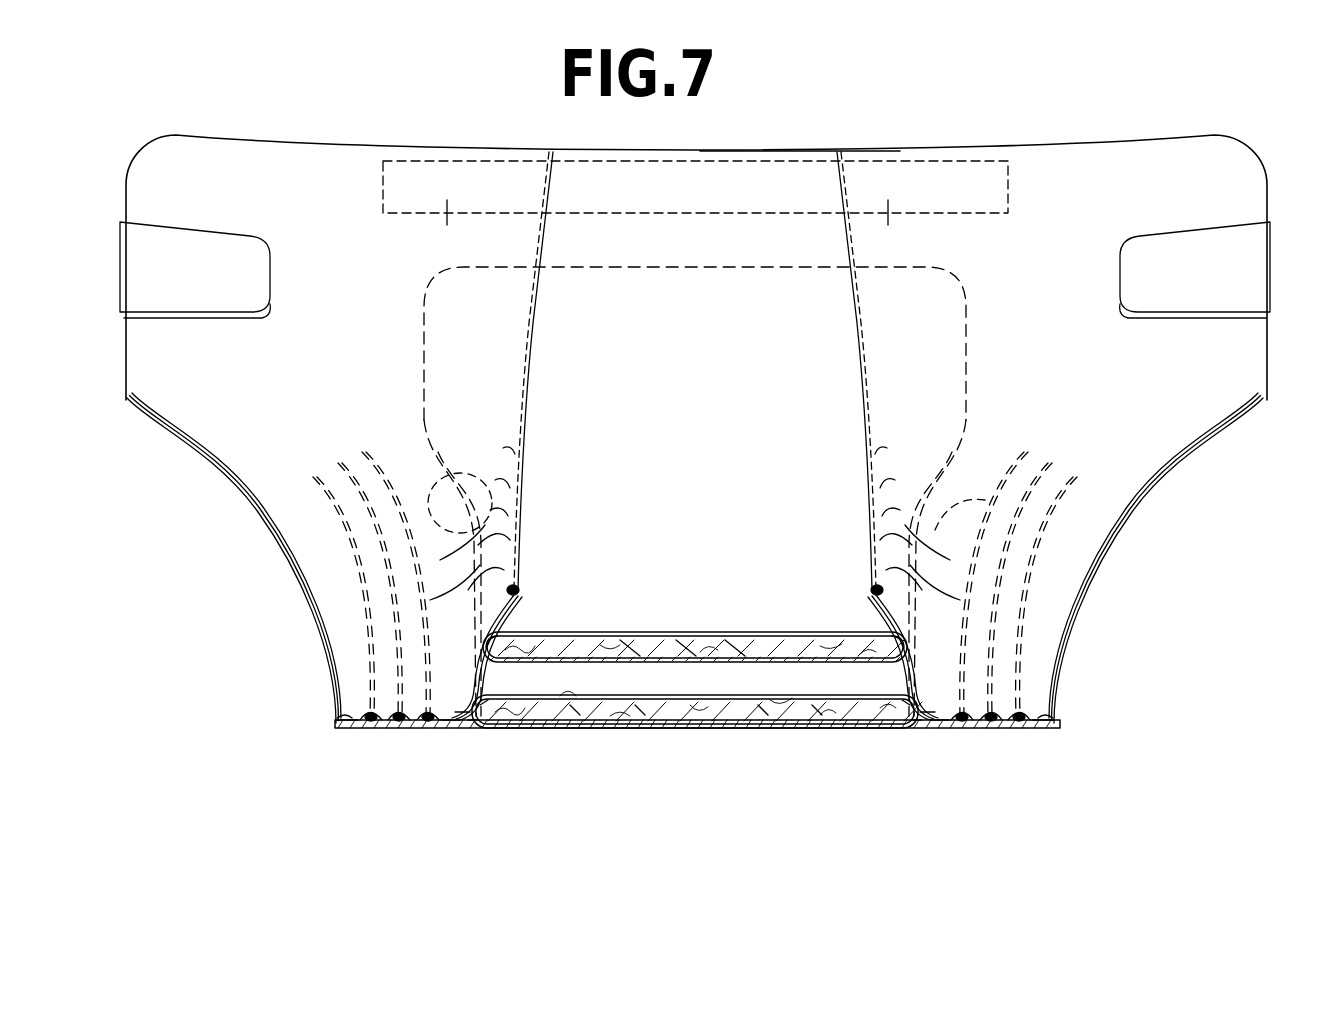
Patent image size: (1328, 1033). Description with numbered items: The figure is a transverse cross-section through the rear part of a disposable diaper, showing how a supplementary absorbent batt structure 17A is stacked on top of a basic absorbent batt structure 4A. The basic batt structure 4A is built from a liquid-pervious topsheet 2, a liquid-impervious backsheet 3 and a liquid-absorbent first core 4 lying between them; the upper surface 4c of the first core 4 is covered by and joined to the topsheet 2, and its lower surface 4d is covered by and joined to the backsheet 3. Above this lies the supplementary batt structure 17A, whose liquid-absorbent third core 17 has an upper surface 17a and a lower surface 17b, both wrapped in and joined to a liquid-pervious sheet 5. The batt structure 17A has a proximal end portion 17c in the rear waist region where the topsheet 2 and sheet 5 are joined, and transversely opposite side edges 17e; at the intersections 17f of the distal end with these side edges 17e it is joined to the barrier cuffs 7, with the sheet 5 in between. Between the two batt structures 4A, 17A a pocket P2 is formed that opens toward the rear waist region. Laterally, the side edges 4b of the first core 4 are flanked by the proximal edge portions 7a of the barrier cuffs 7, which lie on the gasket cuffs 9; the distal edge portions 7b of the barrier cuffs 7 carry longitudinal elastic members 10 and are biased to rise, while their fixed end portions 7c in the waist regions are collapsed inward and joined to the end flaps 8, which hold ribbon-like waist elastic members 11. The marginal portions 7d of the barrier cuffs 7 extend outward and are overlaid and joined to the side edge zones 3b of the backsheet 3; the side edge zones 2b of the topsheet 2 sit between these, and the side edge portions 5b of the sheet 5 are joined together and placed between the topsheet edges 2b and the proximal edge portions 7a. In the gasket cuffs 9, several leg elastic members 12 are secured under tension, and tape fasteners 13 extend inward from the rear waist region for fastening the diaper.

The liquid-pervious topsheet 2 is at (729, 724).
The side edge zones of the topsheet 2b is at (473, 730).
The liquid-impervious backsheet 3 is at (640, 725).
The side edge zones of the backsheet 3b is at (350, 725).
The liquid-absorbent first core 4 is at (708, 713).
The basic absorbent batt structure 4A is at (614, 734).
The side edges of the first core 4b is at (490, 725).
The upper surface of the first core 4c is at (575, 722).
The lower surface of the first core 4d is at (818, 728).
The liquid-pervious sheet 5 is at (686, 640).
The side edge portions of the liquid-pervious sheet 5b is at (449, 726).
The barrier cuffs 7 is at (478, 440).
The proximal edge portions 7a is at (452, 705).
The distal edge portions 7b is at (503, 473).
The fixed end portions 7c is at (447, 222).
The marginal portions 7d is at (340, 712).
The end flaps 8 is at (720, 225).
The gasket cuffs 9 is at (210, 458).
The elastic members 10 is at (518, 585).
The ribbon-like elastic members 11 is at (795, 175).
The elastic members 12 is at (425, 723).
The tape fasteners 13 is at (133, 253).
The liquid-absorbent third core 17 is at (803, 628).
The upper surface of the third core 17a is at (626, 645).
The supplementary absorbent batt structure 17A is at (652, 666).
The lower surface of the third core 17b is at (735, 640).
The proximal end portion 17c is at (630, 287).
The side edges of the batt structure 17e is at (455, 503).
The intersections 17f is at (503, 632).
The pocket P2 is at (763, 700).